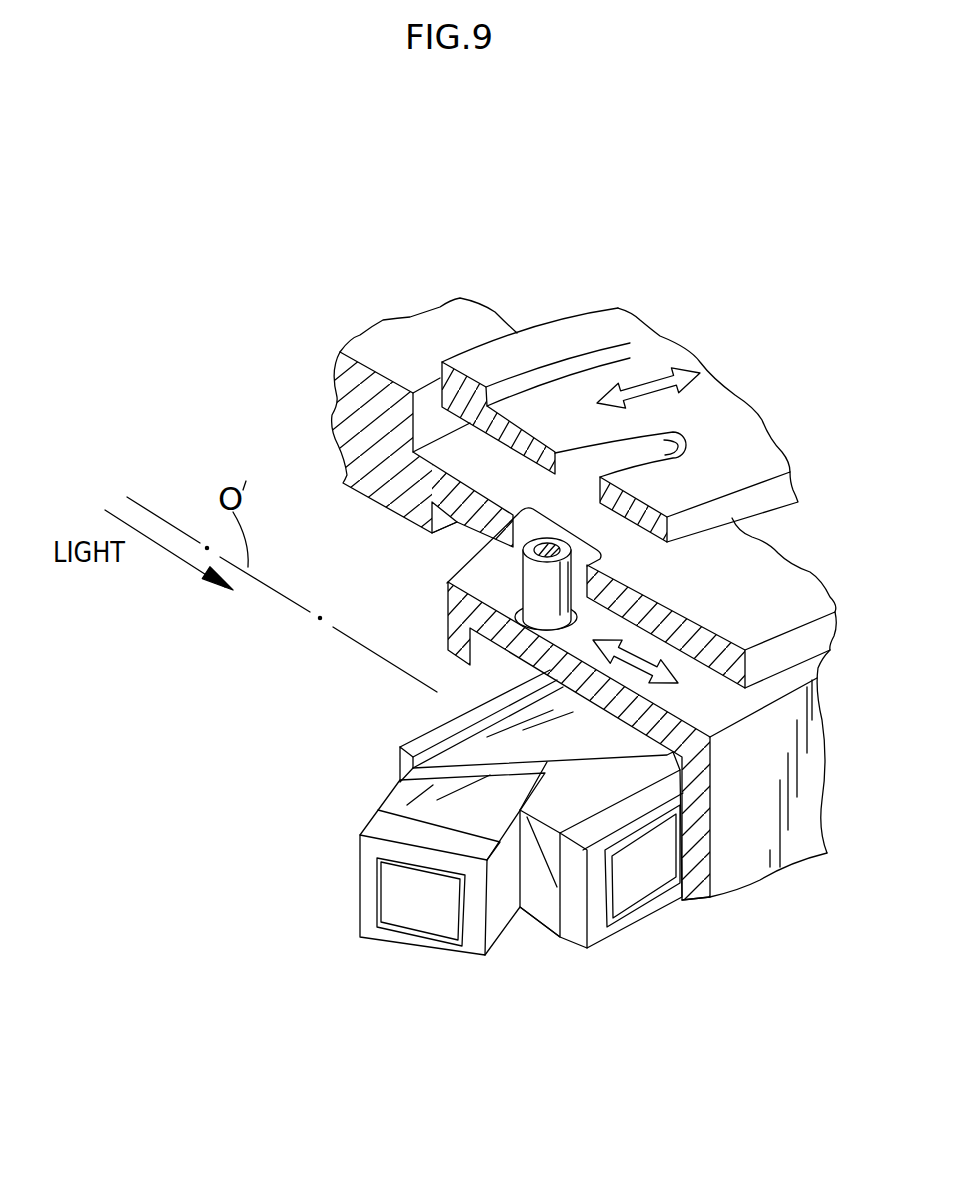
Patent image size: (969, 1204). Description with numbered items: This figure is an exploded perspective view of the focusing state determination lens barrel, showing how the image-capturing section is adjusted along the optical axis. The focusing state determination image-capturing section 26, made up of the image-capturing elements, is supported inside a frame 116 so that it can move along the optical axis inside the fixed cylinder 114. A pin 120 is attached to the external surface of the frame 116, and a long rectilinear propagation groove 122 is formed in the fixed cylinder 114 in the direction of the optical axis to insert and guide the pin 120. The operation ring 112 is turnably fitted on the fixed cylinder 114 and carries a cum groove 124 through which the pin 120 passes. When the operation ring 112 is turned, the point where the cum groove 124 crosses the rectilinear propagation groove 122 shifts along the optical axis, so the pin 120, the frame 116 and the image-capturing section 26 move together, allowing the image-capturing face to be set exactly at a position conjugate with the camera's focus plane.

The focusing state determination image-capturing section 26 is at (536, 942).
The operation ring 112 is at (587, 393).
The fixed cylinder 114 is at (462, 462).
The frame 116 is at (447, 583).
The pin 120 is at (490, 562).
The rectilinear propagation groove 122 is at (522, 532).
The cum groove 124 is at (683, 433).